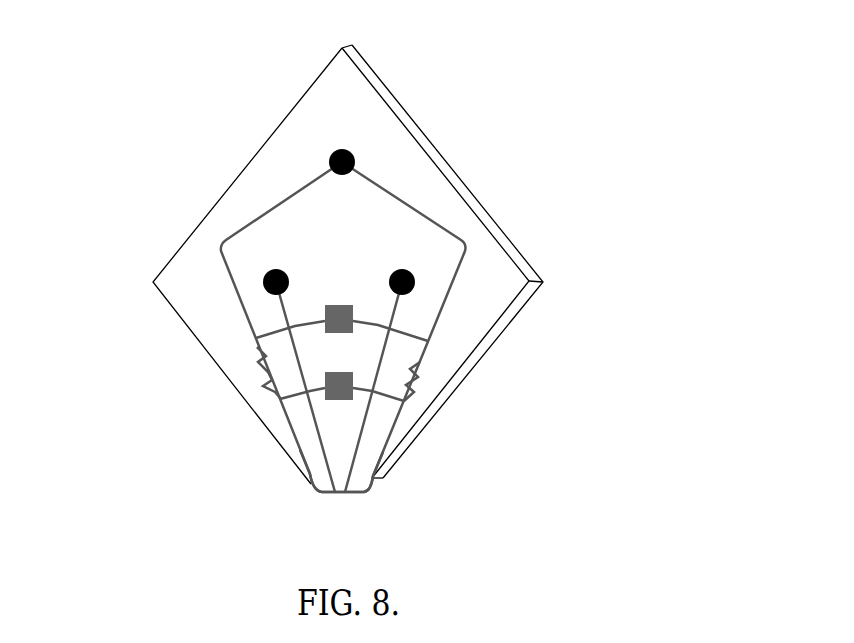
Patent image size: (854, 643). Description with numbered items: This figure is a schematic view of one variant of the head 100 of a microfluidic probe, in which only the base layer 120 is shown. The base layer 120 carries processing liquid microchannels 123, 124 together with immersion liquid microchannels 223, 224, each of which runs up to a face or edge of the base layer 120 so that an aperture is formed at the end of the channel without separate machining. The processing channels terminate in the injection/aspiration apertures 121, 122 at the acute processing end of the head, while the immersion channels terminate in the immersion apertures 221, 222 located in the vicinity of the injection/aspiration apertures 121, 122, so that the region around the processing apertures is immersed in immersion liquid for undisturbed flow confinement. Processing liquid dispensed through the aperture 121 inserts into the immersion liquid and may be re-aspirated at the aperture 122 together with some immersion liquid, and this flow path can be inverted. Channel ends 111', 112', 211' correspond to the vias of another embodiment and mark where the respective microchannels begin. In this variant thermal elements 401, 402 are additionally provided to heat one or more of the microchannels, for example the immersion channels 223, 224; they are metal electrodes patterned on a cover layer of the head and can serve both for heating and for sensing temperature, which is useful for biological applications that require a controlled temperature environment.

The head 100 is at (373, 285).
The base layer 120 is at (488, 275).
The channel end 111' is at (179, 260).
The channel end 112' is at (475, 236).
The channel end 211' is at (420, 136).
The immersion liquid microchannel 223 is at (243, 313).
The immersion liquid microchannel 224 is at (438, 315).
The processing liquid microchannel 123 is at (297, 383).
The processing liquid microchannel 124 is at (365, 420).
The aperture 121 is at (343, 492).
The aperture 122 is at (352, 517).
The immersion aperture 221 is at (310, 479).
The immersion aperture 222 is at (373, 479).
The thermal element 401 is at (341, 320).
The thermal element 402 is at (338, 386).